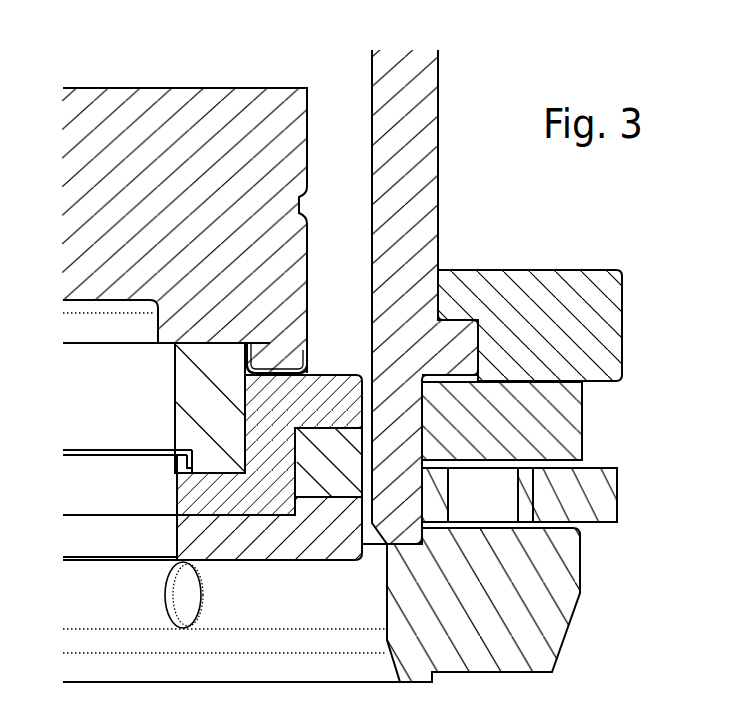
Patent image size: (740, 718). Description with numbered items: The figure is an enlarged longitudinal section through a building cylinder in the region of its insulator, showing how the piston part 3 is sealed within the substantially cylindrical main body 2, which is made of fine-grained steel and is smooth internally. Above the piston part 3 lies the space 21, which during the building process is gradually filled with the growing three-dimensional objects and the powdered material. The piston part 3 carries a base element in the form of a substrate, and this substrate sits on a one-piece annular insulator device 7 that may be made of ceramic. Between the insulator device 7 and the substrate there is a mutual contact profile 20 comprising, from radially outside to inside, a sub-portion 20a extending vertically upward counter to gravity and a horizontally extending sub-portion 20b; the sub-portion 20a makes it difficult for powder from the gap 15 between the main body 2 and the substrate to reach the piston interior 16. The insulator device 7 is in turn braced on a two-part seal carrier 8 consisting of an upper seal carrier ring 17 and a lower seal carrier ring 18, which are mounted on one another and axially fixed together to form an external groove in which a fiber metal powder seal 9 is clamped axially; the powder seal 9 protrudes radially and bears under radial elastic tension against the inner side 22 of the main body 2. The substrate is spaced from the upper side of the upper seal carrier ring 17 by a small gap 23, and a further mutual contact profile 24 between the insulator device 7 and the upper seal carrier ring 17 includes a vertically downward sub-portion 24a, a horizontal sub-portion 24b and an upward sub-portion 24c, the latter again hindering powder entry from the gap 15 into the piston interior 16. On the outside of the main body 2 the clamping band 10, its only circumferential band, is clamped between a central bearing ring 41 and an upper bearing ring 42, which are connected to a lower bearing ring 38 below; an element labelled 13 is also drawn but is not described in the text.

The space 21 is at (99, 73).
The piston part 3 is at (165, 100).
The inner side of the main body 22 is at (372, 120).
The main body 2 is at (426, 157).
The gap 15 is at (349, 228).
The clamping band 10 is at (464, 343).
The upper bearing ring 42 is at (580, 300).
The mutual contact profile 20 is at (201, 337).
The sub-portion extending counter to gravity 20a is at (260, 343).
The horizontally extending sub-portion 20b is at (222, 343).
The gap 23 is at (310, 343).
The vertically downwardly extending sub-portion 24a is at (197, 382).
The insulator device 7 is at (197, 412).
The piston interior 16 is at (113, 442).
The central bearing ring 41 is at (582, 423).
The sub-portion extending counter to gravity 24c is at (177, 463).
The spring / retaining ring 13 is at (590, 527).
The mutual contact profile 24 is at (175, 532).
The horizontally extending sub-portion 24b is at (213, 484).
The upper seal carrier ring 17 is at (266, 522).
The seal carrier 8 is at (296, 500).
The lower seal carrier ring 18 is at (313, 545).
The powder seal 9 is at (348, 505).
The lower bearing ring 38 is at (485, 627).